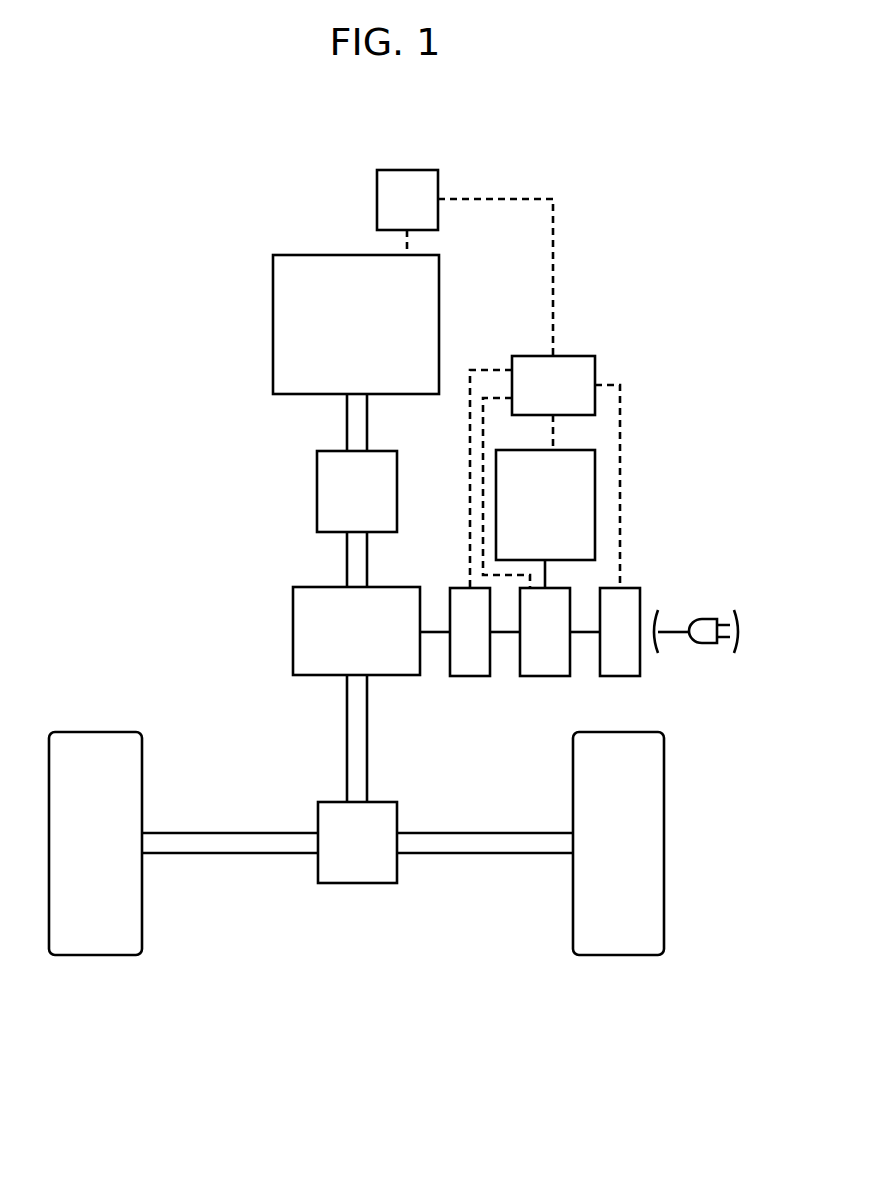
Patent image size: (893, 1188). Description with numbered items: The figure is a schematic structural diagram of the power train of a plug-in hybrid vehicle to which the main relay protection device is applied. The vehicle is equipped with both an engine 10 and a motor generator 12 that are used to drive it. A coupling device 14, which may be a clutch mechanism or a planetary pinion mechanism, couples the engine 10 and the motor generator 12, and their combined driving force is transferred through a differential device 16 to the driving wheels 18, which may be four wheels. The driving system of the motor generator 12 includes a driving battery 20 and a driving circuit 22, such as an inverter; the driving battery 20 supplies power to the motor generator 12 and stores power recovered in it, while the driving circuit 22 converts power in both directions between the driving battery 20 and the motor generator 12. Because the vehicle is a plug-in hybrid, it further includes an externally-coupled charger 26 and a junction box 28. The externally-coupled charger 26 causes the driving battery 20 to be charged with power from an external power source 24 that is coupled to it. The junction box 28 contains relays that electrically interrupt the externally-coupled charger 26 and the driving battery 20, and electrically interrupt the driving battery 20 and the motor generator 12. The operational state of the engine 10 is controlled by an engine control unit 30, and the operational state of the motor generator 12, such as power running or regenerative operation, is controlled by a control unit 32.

The engine 10 is at (273, 320).
The motor generator 12 is at (293, 633).
The coupling device 14 is at (317, 488).
The differential device 16 is at (358, 883).
The driving wheels 18 is at (97, 955).
The driving battery 20 is at (595, 498).
The driving circuit 22 is at (470, 676).
The external power source 24 is at (710, 660).
The externally-coupled charger 26 is at (627, 676).
The junction box 28 is at (545, 676).
The engine control unit 30 is at (410, 170).
The control unit 32 is at (595, 362).